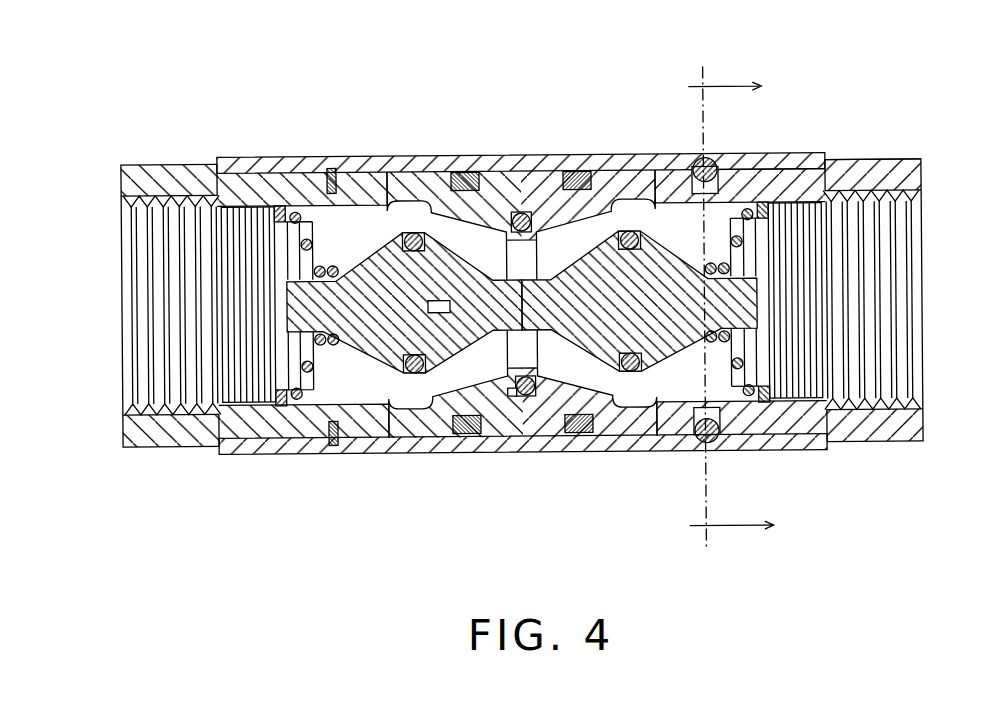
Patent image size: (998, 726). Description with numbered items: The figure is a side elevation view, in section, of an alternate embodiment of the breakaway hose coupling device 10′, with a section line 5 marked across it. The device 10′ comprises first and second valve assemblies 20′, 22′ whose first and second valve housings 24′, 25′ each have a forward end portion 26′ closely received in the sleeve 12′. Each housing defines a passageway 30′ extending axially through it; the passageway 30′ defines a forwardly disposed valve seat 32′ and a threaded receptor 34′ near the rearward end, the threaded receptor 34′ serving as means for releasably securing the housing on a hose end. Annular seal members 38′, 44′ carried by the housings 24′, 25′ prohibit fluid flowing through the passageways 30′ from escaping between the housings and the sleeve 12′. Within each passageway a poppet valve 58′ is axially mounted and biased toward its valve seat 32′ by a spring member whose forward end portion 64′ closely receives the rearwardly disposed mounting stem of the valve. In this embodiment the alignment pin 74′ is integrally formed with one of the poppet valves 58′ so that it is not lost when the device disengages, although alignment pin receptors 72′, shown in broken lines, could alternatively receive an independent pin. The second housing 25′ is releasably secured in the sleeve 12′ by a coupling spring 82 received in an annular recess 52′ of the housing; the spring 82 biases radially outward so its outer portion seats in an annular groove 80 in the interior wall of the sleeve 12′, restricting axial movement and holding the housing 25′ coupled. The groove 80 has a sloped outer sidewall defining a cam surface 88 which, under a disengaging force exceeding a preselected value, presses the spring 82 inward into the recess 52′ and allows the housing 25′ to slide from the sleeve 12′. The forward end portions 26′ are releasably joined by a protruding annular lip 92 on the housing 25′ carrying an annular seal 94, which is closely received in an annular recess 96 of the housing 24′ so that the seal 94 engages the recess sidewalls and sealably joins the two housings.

The breakaway hose coupling device 10′ is at (522, 282).
The sleeve 12′ is at (243, 157).
The first valve assembly 20′ is at (170, 155).
The second valve assembly 22′ is at (876, 140).
The first valve housing 24′ is at (293, 182).
The second valve housing 25′ is at (858, 157).
The forward end portion 26′ is at (530, 200).
The passageway 30′ is at (343, 387).
The valve seat 32′ is at (420, 228).
The threaded receptor 34′ is at (120, 287).
The annular seal member 38′ is at (470, 432).
The annular seal member 44′ is at (597, 372).
The annular recess 52′ is at (668, 170).
The poppet valve 58′ is at (380, 345).
The forward end portion of spring member 64′ is at (302, 233).
The alignment pin receptor 72′ is at (445, 300).
The alignment pin 74′ is at (505, 372).
The annular groove 80 is at (706, 157).
The coupling spring 82 is at (697, 165).
The cam surface 88 is at (738, 158).
The annular lip 92 is at (513, 395).
The annular seal 94 is at (536, 432).
The annular recess 96 is at (540, 214).
The section line 5- 5 is at (730, 307).